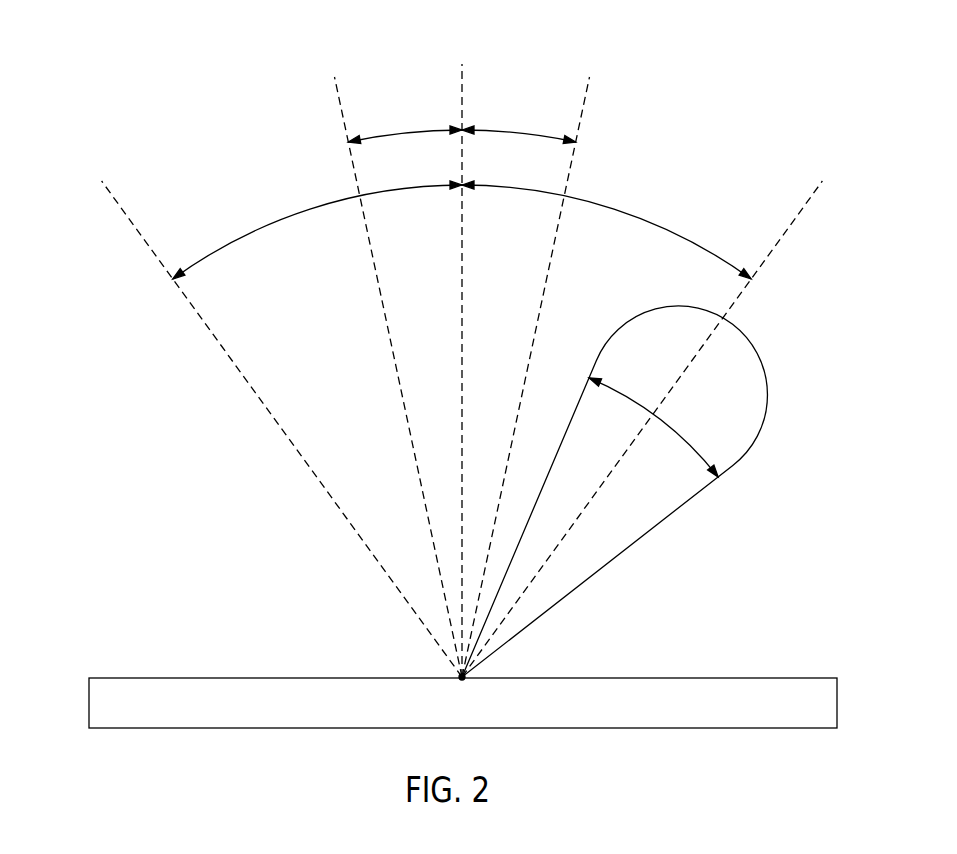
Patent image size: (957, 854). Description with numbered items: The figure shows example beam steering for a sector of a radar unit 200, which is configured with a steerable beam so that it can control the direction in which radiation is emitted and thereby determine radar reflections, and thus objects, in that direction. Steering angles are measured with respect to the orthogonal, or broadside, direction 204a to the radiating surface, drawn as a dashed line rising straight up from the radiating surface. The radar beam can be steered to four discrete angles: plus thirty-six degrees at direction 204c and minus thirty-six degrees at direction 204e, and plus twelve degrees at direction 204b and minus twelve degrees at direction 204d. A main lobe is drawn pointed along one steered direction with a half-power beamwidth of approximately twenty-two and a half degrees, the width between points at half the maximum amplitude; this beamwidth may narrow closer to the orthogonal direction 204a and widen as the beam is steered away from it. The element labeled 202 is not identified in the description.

The radar unit 200 is at (48, 119).
The antenna beam / ground plane 202 is at (757, 337).
The orthogonal direction 204a is at (452, 84).
The plus twelve degree steering direction 204b is at (593, 106).
The plus thirty-six degree steering direction 204c is at (809, 215).
The minus twelve degree steering direction 204d is at (334, 119).
The minus thirty-six degree steering direction 204e is at (116, 216).